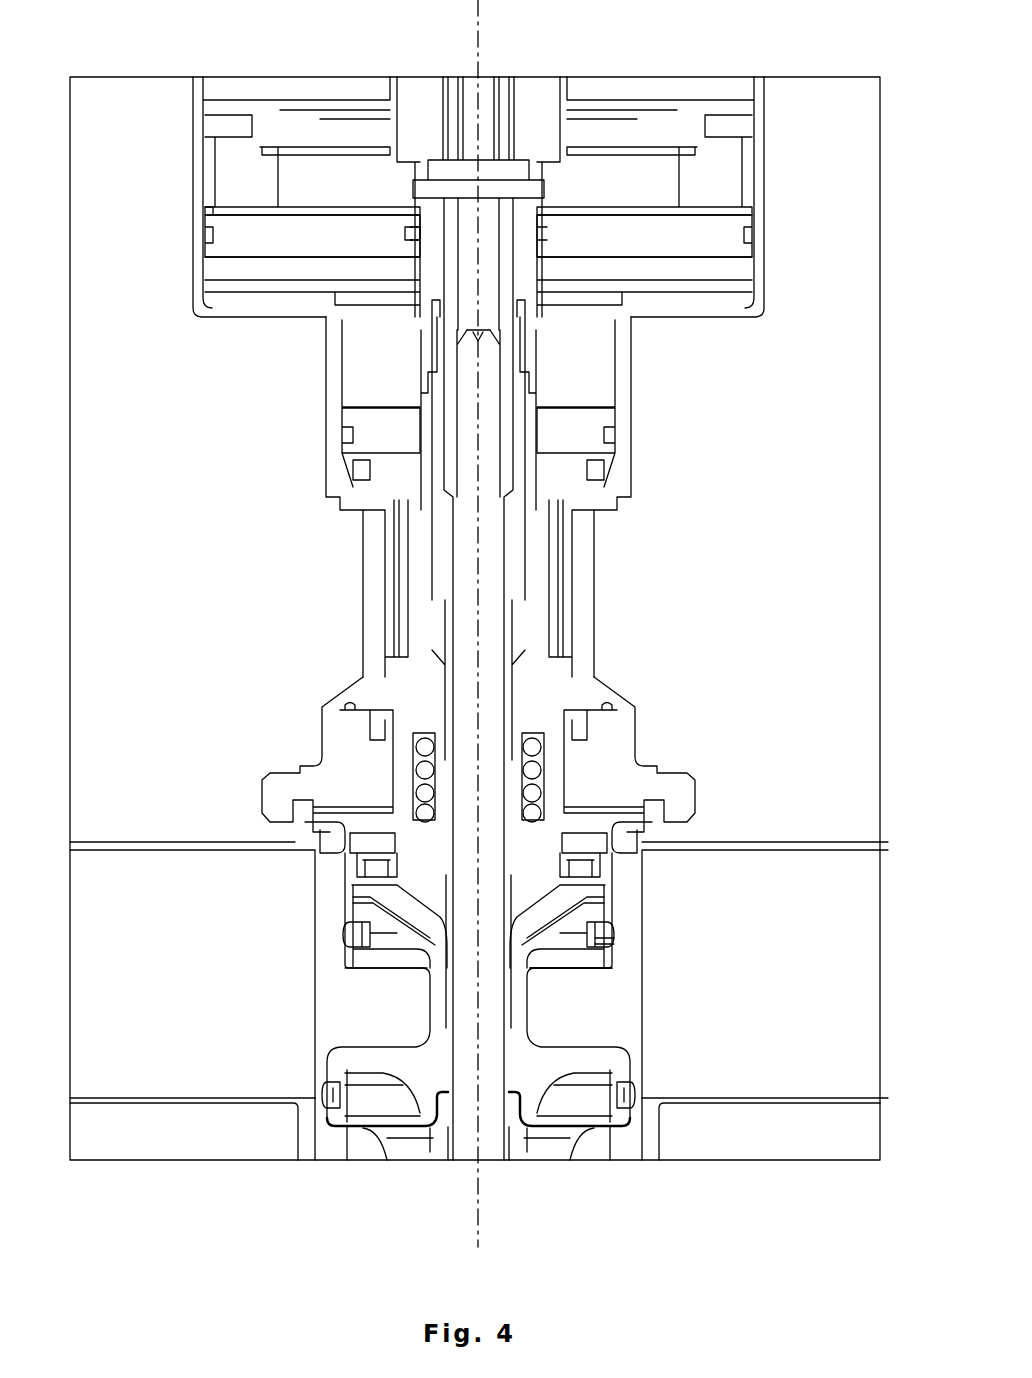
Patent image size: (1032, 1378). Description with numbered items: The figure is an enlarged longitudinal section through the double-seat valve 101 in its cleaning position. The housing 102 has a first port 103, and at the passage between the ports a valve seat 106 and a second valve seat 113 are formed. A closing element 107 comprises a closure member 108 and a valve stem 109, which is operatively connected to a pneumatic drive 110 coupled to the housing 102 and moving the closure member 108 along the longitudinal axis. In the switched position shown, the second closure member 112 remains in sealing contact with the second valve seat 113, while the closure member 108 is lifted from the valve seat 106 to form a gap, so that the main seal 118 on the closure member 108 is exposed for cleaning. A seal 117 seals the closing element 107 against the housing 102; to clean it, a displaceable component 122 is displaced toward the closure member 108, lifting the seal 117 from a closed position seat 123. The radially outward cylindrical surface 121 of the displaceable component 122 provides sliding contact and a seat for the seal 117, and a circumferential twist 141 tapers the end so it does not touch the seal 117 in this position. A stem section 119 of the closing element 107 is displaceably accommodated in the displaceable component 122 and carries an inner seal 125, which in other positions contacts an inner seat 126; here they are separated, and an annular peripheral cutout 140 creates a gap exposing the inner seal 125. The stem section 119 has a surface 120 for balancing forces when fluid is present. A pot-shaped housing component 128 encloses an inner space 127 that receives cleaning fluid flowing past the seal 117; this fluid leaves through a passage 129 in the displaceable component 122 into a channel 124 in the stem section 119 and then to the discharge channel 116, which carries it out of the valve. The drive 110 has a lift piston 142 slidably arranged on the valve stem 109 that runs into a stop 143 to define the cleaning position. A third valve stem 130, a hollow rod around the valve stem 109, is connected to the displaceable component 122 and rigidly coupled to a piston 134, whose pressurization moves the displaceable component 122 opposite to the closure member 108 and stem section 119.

The double-seat valve 101 is at (185, 60).
The housing 102 is at (317, 1133).
The first port 103 is at (168, 842).
The valve seat 106 is at (660, 1112).
The closing element 107 is at (382, 993).
The closure member 108 is at (623, 1070).
The valve stem 109 is at (528, 340).
The drive 110 is at (755, 185).
The second closure member 112 is at (595, 1143).
The second valve seat 113 is at (612, 1142).
The discharge channel 116 is at (405, 1150).
The seal 117 is at (313, 828).
The main seal 118 is at (635, 1097).
The stem section 119 is at (350, 933).
The surface 120 is at (560, 957).
The cylindrical surface 121 is at (612, 905).
The displaceable component 122 is at (350, 912).
The closed position seat 123 is at (640, 865).
The channel 124 is at (605, 897).
The inner seal 125 is at (610, 932).
The inner seat 126 is at (585, 970).
The inner space 127 is at (393, 787).
The pot-shaped housing component 128 is at (335, 737).
The passage 129 is at (587, 867).
The third valve stem 130 is at (537, 530).
The piston 134 is at (578, 430).
The annular peripheral cutout 140 is at (612, 938).
The circumferential twist 141 is at (340, 853).
The lift piston 142 is at (700, 237).
The stop 143 is at (207, 212).